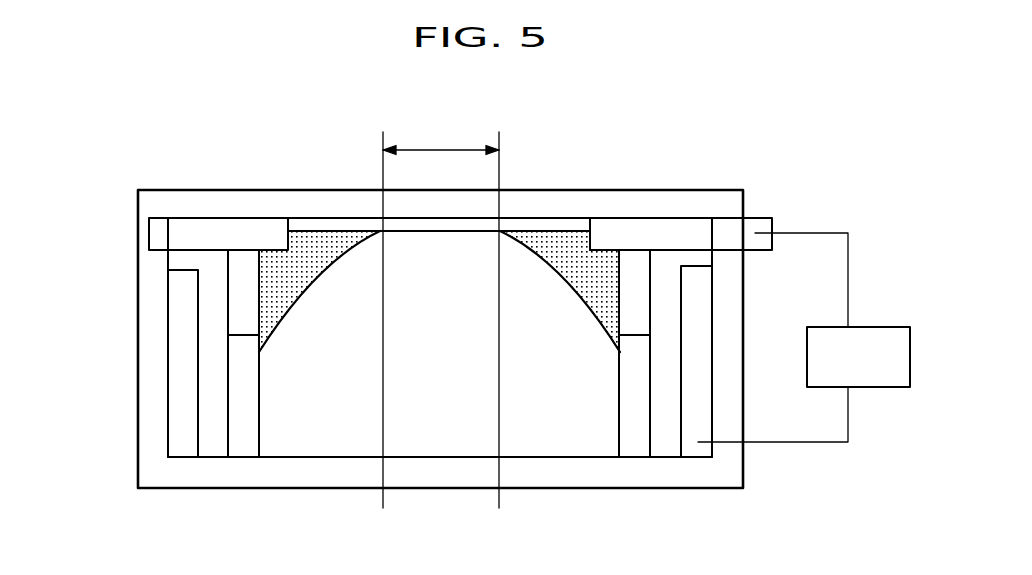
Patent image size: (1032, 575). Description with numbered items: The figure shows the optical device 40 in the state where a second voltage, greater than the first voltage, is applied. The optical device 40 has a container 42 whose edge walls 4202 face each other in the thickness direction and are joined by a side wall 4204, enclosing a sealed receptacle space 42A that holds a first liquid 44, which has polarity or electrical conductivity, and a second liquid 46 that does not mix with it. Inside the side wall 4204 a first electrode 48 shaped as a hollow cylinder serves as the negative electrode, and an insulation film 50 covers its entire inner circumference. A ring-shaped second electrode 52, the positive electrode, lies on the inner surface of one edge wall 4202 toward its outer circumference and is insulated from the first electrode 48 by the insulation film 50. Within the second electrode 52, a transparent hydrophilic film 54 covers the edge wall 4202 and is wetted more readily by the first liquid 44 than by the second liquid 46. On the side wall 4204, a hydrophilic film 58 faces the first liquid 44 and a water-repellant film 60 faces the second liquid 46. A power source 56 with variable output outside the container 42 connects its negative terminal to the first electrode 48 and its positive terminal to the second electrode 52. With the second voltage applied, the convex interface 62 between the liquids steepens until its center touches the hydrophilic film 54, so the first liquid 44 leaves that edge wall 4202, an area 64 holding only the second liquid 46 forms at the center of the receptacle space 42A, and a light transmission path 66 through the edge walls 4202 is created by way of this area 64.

The optical device 40 is at (423, 296).
The container 42 is at (423, 278).
The edge wall 4202 is at (277, 190).
The side wall 4204 is at (137, 390).
The receptacle space 42A is at (343, 423).
The first liquid 44 is at (319, 242).
The second liquid 46 is at (460, 445).
The first electrode 48 is at (178, 310).
The insulation film 50 is at (664, 432).
The second electrode 52 is at (167, 218).
The hydrophilic film 54 is at (390, 232).
The power source 56 is at (887, 327).
The hydrophilic film 58 is at (266, 302).
The water-repellant film 60 is at (262, 398).
The interface 62 is at (561, 268).
The area 64 is at (443, 150).
The light transmission path 66 is at (500, 425).